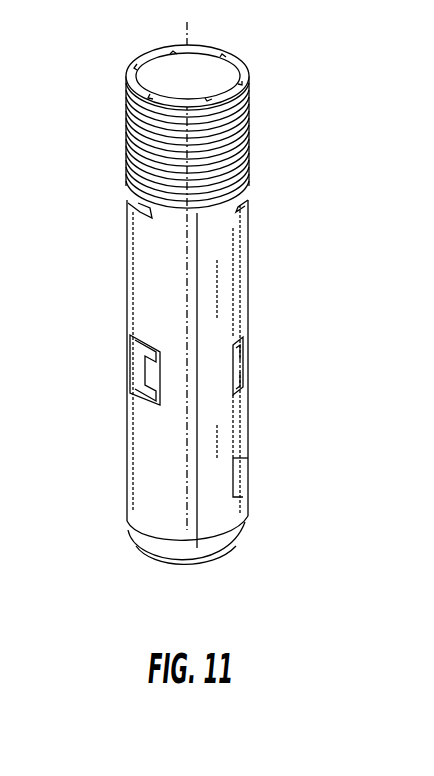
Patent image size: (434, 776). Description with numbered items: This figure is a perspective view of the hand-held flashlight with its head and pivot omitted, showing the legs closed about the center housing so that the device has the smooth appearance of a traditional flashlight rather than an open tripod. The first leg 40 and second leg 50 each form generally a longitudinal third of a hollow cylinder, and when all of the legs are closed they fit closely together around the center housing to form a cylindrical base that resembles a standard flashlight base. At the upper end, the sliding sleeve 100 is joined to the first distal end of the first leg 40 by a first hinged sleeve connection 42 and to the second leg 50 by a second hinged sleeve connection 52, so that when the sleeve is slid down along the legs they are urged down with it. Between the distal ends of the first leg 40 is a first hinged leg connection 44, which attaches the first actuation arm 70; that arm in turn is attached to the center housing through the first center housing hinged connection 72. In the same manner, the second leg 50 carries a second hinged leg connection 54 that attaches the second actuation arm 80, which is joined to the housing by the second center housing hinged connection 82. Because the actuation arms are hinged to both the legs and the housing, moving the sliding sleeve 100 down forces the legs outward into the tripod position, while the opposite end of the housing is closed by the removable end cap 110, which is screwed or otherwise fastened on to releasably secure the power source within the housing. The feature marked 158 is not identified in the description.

The first leg 40 is at (134, 482).
The first hinged sleeve connection 42 is at (127, 203).
The first hinged leg connection 44 is at (135, 338).
The second leg 50 is at (244, 498).
The second hinged sleeve connection 52 is at (245, 200).
The second hinged leg connection 54 is at (243, 331).
The first actuation arm 70 is at (140, 372).
The first center housing hinged connection 72 is at (131, 398).
The second actuation arm 80 is at (243, 357).
The second center housing hinged connection 82 is at (243, 379).
The sliding sleeve 100 is at (245, 70).
The removable end cap 110 is at (203, 568).
The detent 158 is at (245, 460).